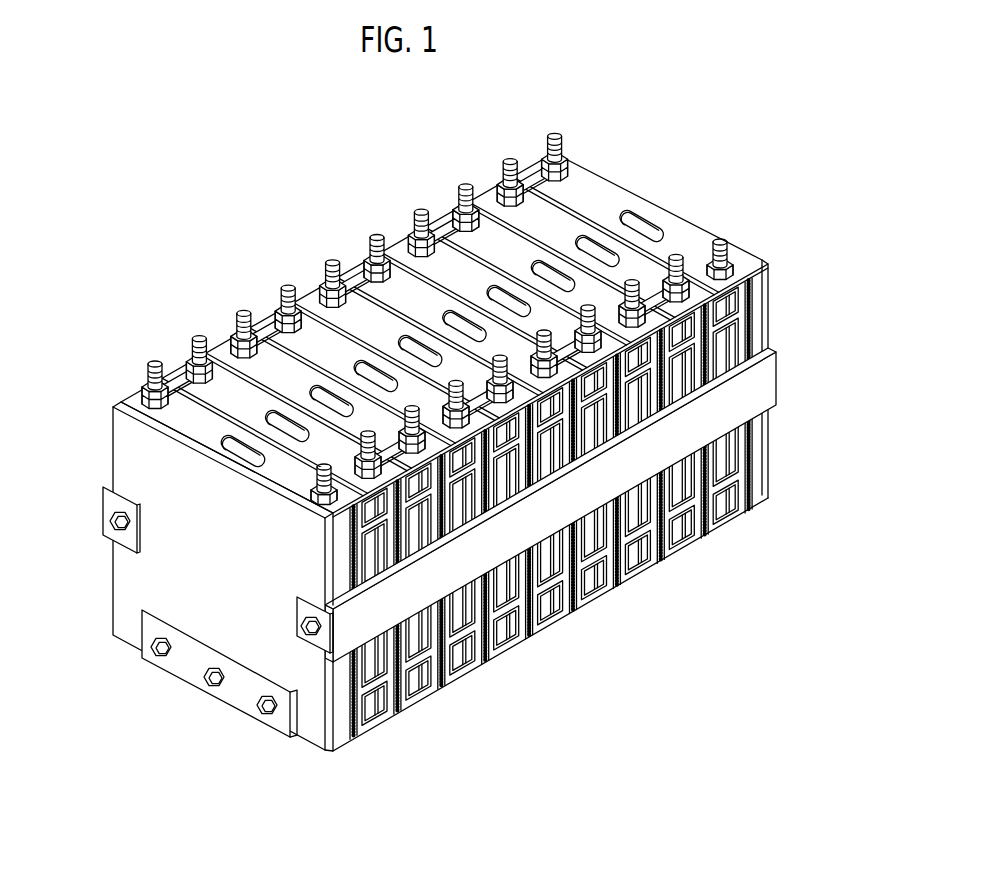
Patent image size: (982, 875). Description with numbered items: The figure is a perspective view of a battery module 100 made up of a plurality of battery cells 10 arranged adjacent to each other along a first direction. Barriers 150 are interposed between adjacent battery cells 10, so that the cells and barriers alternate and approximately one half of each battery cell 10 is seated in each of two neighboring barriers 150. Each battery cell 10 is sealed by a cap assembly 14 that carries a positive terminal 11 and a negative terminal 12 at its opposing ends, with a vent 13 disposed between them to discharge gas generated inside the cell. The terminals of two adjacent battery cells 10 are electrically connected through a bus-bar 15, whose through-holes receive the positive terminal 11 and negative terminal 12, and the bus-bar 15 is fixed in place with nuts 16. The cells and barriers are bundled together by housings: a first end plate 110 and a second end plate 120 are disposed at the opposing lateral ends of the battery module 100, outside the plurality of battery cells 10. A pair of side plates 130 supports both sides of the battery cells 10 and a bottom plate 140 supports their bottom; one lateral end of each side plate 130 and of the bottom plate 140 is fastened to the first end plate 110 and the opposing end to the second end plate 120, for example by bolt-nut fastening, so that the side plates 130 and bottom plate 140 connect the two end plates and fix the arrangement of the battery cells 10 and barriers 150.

The battery module 100 is at (178, 212).
The battery cell 10 is at (772, 499).
The positive terminal 11 is at (556, 135).
The negative terminal 12 is at (722, 240).
The vent 13 is at (641, 215).
The cap assembly 14 is at (600, 187).
The bus-bar 15 is at (182, 381).
The nut 16 is at (233, 331).
The first end plate 110 is at (136, 583).
The second end plate 120 is at (774, 440).
The side plate 130 is at (100, 517).
The bottom plate 140 is at (190, 665).
The barrier 150 is at (530, 645).